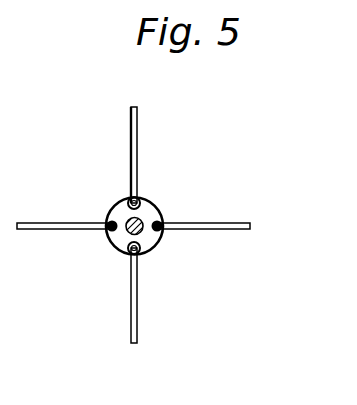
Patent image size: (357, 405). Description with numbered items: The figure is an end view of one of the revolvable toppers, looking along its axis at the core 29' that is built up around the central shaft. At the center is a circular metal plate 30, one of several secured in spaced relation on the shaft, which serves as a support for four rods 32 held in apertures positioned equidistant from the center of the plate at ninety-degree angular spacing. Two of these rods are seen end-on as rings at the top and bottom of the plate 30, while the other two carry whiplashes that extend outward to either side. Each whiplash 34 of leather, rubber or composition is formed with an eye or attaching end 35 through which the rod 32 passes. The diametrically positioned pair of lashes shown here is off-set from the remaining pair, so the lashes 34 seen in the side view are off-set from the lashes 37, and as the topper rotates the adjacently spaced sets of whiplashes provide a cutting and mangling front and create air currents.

The core 29' is at (83, 206).
The circular metal plate 30 is at (156, 207).
The rod 32 is at (138, 196).
The whiplash 34 is at (137, 127).
The eye or attaching end 35 is at (127, 200).
The whiplash 37 is at (44, 230).